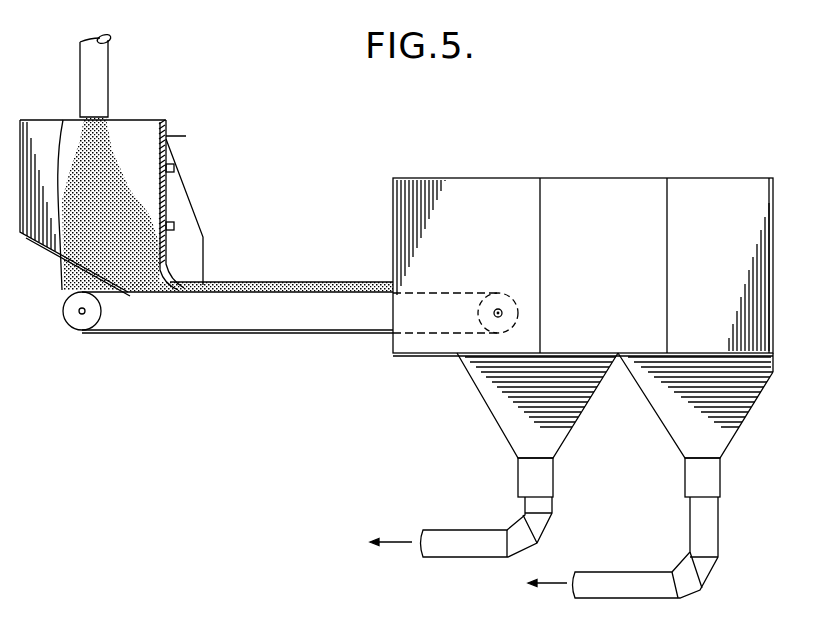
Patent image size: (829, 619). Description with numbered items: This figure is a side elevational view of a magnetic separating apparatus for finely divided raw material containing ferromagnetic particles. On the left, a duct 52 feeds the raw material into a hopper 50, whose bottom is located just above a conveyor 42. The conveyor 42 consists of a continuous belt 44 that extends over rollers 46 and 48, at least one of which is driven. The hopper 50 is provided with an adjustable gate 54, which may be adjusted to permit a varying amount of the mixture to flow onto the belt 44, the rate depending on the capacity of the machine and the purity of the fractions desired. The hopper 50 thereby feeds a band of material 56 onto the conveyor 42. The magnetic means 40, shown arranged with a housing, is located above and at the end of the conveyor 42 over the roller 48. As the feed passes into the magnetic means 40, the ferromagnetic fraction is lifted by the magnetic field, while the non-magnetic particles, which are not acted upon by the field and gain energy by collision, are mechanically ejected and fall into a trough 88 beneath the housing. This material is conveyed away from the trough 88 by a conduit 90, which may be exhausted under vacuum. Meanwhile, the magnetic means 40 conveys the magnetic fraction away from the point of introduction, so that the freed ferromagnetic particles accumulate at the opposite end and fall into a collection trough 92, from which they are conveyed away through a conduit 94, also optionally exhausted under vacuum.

The magnetic means 40 is at (604, 254).
The conveyor 42 is at (292, 297).
The continuous belt 44 is at (304, 333).
The roller 46 is at (77, 322).
The roller 48 is at (491, 301).
The hopper 50 is at (143, 124).
The duct 52 is at (112, 62).
The adjustable gate 54 is at (167, 193).
The band of material 56 is at (310, 284).
The trough 88 is at (495, 414).
The conduit 90 is at (526, 505).
The collection trough 92 is at (681, 431).
The conduit 94 is at (697, 528).